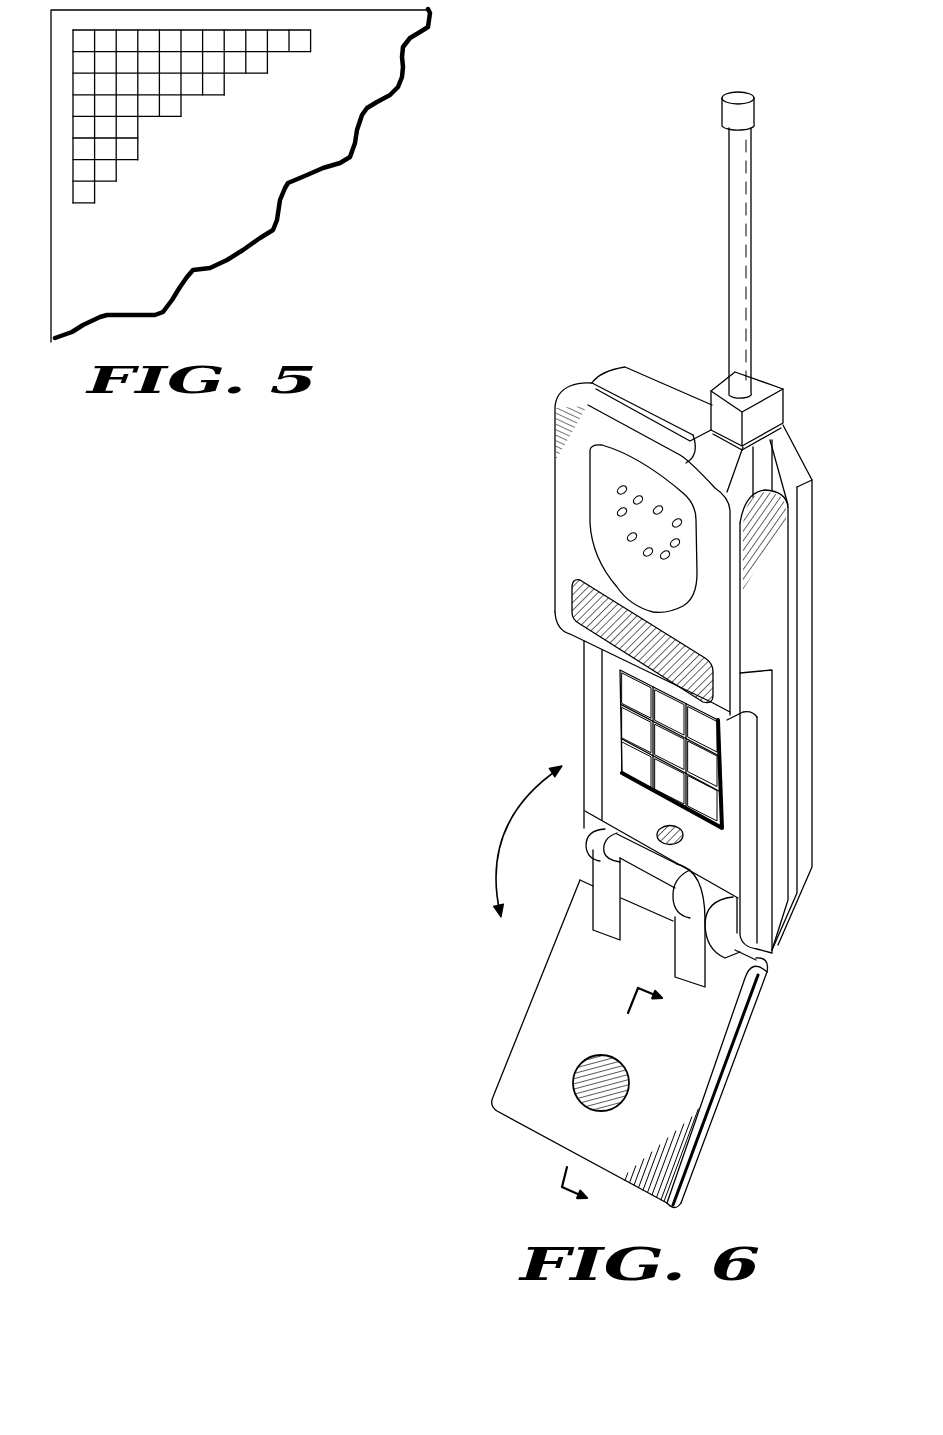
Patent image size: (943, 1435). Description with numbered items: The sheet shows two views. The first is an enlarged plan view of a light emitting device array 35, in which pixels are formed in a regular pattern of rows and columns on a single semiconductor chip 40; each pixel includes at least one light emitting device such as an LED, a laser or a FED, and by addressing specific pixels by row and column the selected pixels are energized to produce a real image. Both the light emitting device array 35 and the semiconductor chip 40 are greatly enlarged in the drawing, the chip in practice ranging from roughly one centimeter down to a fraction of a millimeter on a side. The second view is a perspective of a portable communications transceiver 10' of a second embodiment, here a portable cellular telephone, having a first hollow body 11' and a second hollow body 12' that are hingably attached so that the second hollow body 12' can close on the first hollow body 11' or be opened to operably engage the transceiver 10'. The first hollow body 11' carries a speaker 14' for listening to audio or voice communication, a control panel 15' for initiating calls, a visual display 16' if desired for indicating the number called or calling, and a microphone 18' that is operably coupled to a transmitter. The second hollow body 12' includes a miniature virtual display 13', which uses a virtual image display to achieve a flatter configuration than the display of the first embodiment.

In FIG. 5, the light emitting device array 35 is at (254, 294).
In FIG. 5, the semiconductor chip 40 is at (399, 64).
In FIG. 6, the portable communications transceiver 10' is at (675, 657).
In FIG. 6, the first hollow body 11' is at (706, 662).
In FIG. 6, the second hollow body 12' is at (650, 1029).
In FIG. 6, the miniature virtual display 13' is at (601, 1060).
In FIG. 6, the speaker 14' is at (614, 574).
In FIG. 6, the control panel 15' is at (631, 749).
In FIG. 6, the visual display 16' is at (530, 841).
In FIG. 6, the microphone 18' is at (652, 821).